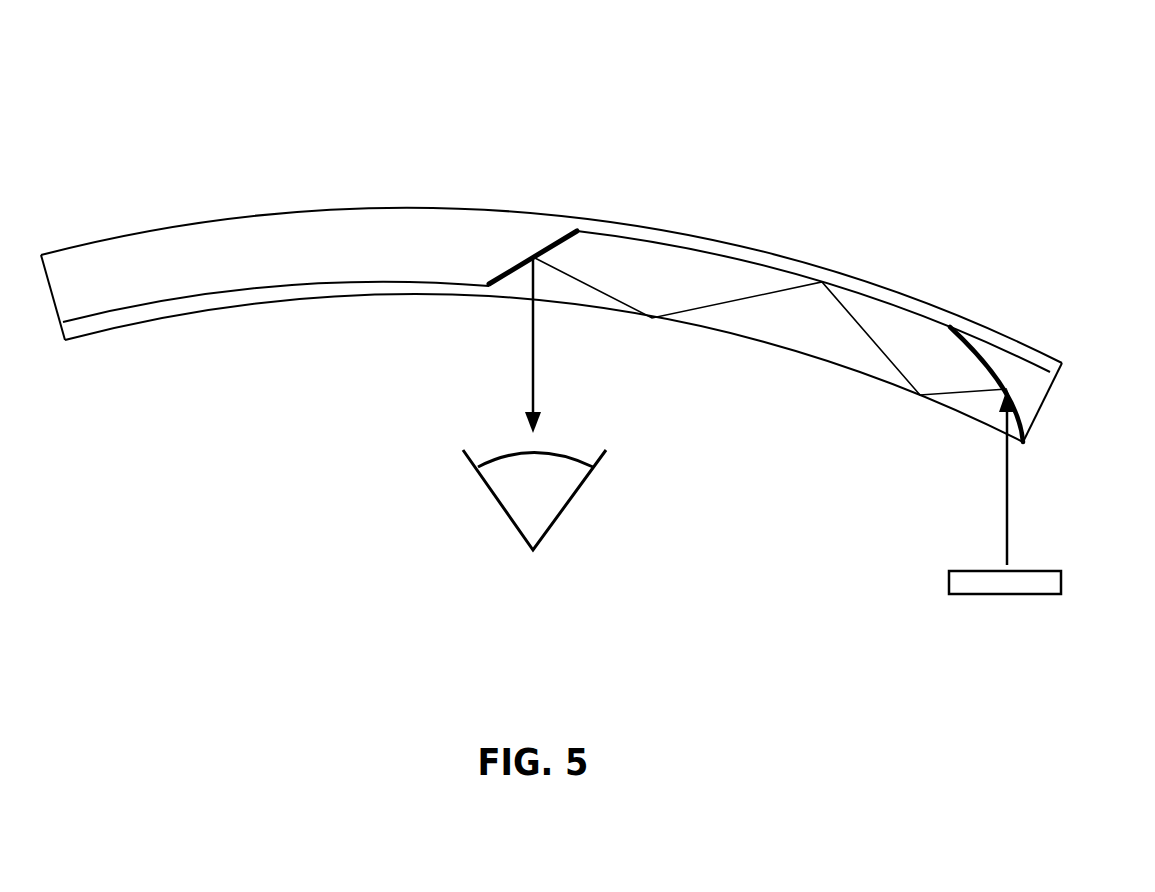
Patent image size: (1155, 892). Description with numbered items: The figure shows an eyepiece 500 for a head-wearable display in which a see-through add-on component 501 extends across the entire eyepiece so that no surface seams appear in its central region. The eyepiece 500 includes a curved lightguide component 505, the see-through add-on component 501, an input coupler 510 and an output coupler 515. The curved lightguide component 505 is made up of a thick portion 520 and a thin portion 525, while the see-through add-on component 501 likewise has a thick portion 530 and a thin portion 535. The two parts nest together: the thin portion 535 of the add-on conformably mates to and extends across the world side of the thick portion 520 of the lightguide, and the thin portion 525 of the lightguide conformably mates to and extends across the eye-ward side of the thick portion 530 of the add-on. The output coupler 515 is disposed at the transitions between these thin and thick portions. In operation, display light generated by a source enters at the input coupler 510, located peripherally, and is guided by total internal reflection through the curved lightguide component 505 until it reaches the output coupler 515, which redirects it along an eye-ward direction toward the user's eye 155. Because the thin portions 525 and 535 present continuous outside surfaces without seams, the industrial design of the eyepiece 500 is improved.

The eyepiece 500 is at (965, 77).
The see-through add-on component 501 is at (215, 184).
The curved lightguide component 505 is at (757, 380).
The input coupler 510 is at (986, 350).
The output coupler 515 is at (550, 242).
The thick portion 520 is at (784, 329).
The thin portion 525 is at (300, 296).
The thick portion 530 is at (227, 271).
The thin portion 535 is at (780, 262).
The user's eye 155 is at (518, 501).